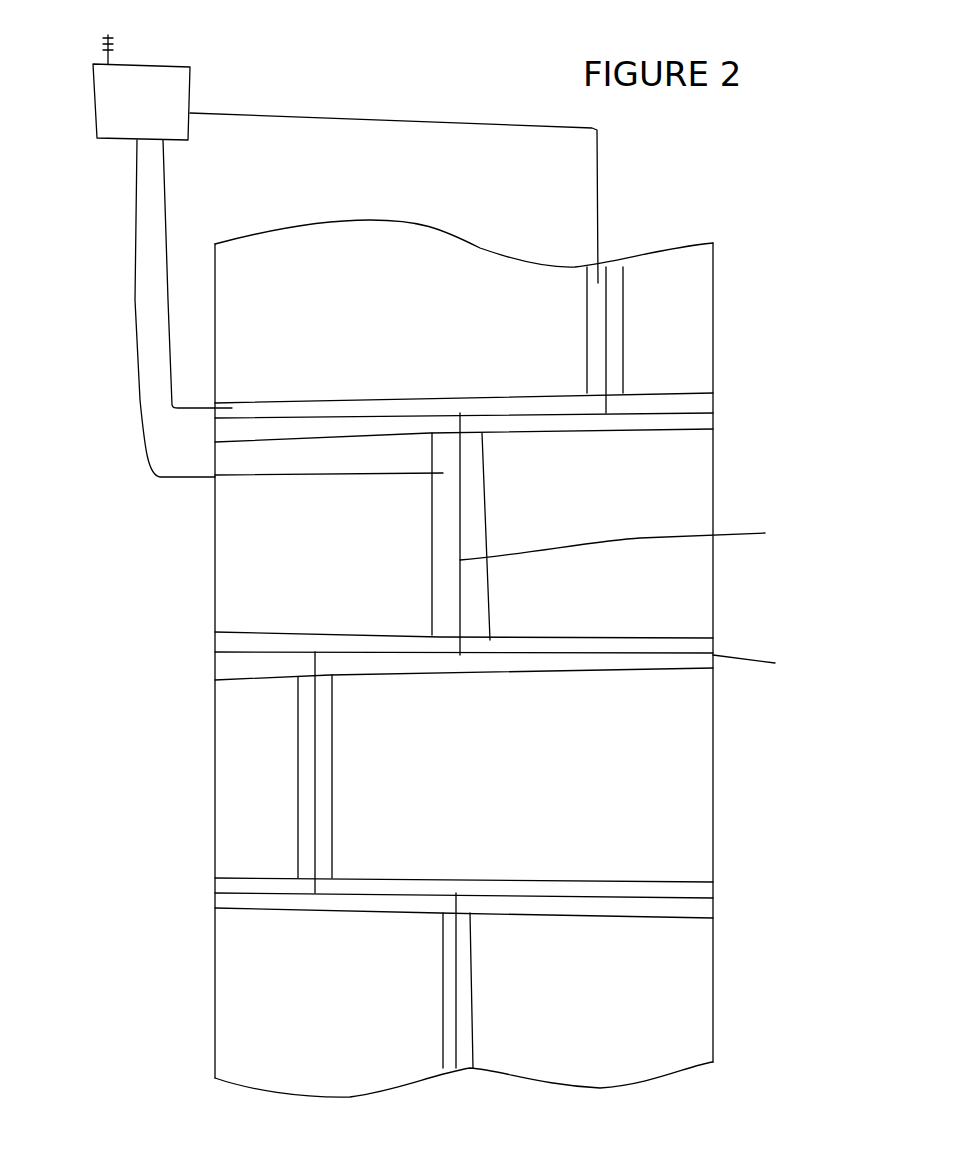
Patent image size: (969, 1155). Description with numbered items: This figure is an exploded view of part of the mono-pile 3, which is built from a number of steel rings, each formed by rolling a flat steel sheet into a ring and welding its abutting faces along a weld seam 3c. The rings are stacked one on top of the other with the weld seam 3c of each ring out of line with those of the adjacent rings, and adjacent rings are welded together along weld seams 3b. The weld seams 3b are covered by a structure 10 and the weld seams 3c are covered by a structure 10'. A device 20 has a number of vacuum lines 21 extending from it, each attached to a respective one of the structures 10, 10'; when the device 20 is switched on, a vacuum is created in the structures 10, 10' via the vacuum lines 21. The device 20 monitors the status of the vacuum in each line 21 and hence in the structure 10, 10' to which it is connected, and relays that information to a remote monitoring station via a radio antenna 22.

The mono-pile 3 is at (117, 534).
The weld seam 3b is at (767, 670).
The weld seam 3c is at (639, 541).
The structure 10 is at (473, 634).
The structure 10' is at (426, 654).
The device 20 is at (234, 53).
The vacuum line 21 is at (222, 117).
The radio antenna 22 is at (90, 48).